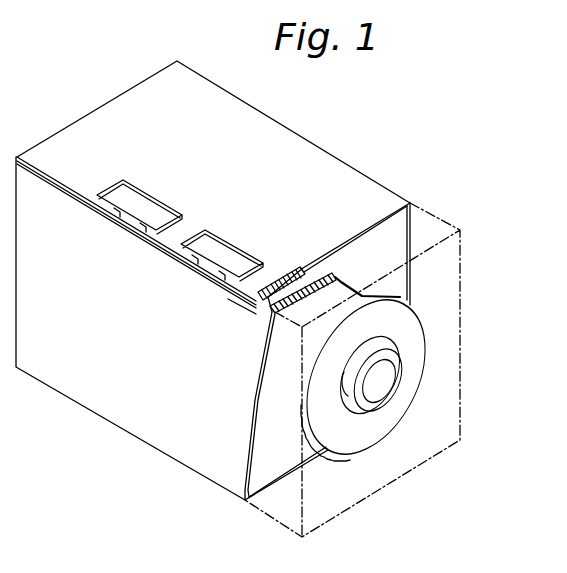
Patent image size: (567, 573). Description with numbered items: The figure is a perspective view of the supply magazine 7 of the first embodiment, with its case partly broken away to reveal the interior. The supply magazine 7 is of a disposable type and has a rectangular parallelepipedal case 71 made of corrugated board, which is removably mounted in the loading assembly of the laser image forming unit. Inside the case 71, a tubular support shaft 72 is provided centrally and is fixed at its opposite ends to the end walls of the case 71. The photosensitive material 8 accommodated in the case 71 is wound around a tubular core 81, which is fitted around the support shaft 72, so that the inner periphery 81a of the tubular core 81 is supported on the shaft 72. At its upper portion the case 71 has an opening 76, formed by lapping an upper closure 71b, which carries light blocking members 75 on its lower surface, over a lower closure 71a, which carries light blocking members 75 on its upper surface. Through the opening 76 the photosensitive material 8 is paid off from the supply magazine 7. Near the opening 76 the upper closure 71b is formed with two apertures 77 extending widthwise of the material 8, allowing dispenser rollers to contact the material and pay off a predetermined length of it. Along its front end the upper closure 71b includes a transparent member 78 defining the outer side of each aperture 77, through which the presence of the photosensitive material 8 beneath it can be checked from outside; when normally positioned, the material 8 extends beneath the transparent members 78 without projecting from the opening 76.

The supply magazine 7 is at (80, 107).
The photosensitive material 8 is at (414, 333).
The case 71 is at (417, 222).
The lower closure 71a is at (350, 284).
The upper closure 71b is at (226, 292).
The tubular support shaft 72 is at (401, 368).
The light blocking members 75 is at (303, 283).
The opening 76 is at (244, 303).
The apertures 77 is at (137, 195).
The transparent member 78 is at (117, 216).
The tubular core 81 is at (336, 368).
The inner periphery 81a is at (348, 385).